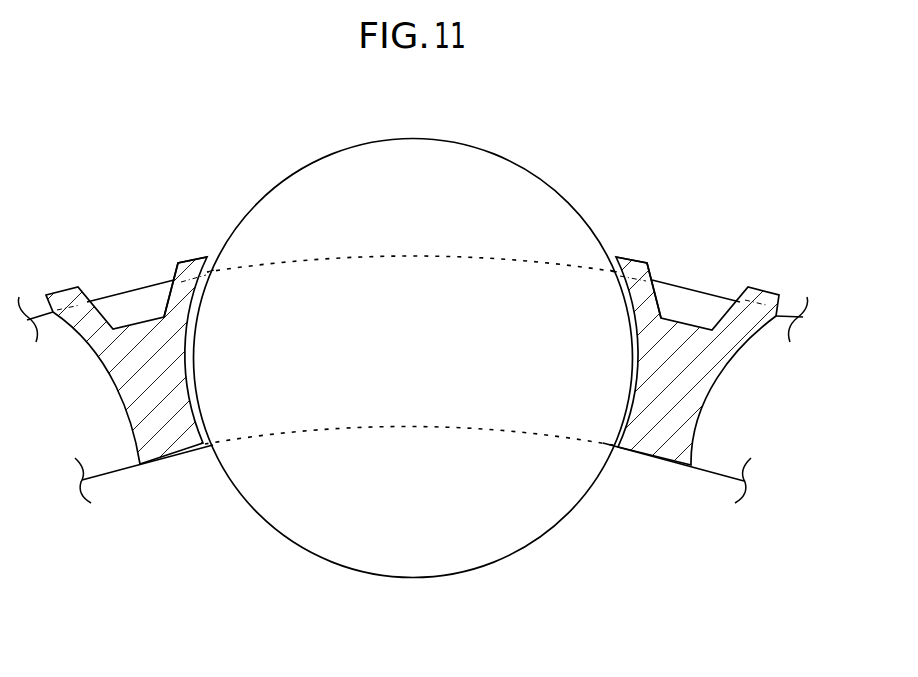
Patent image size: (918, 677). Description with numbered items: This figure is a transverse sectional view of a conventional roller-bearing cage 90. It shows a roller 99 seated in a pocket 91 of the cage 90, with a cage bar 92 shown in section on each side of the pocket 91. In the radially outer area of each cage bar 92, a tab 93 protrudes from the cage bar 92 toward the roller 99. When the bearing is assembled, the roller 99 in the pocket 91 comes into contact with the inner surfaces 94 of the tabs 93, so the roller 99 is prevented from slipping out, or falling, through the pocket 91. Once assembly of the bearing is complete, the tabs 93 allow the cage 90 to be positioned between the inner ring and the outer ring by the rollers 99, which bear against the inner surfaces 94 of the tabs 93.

The cage 90 is at (783, 310).
The pocket 91 is at (487, 383).
The cage bar 92 is at (165, 427).
The tab 93 is at (187, 270).
The inner surface 94 is at (210, 278).
The roller 99 is at (355, 542).